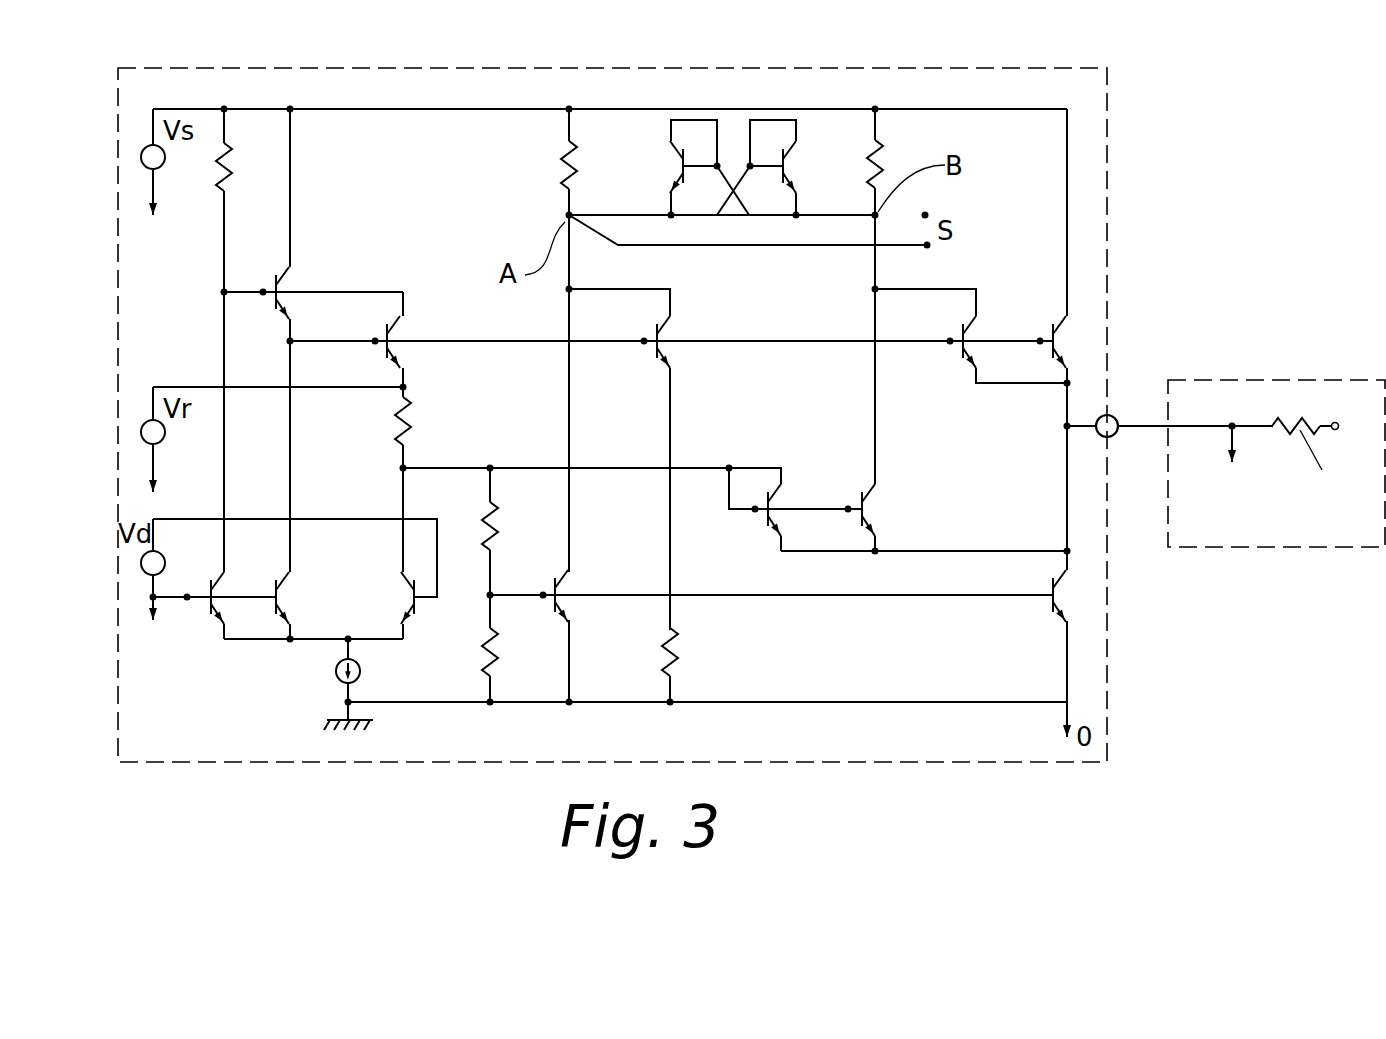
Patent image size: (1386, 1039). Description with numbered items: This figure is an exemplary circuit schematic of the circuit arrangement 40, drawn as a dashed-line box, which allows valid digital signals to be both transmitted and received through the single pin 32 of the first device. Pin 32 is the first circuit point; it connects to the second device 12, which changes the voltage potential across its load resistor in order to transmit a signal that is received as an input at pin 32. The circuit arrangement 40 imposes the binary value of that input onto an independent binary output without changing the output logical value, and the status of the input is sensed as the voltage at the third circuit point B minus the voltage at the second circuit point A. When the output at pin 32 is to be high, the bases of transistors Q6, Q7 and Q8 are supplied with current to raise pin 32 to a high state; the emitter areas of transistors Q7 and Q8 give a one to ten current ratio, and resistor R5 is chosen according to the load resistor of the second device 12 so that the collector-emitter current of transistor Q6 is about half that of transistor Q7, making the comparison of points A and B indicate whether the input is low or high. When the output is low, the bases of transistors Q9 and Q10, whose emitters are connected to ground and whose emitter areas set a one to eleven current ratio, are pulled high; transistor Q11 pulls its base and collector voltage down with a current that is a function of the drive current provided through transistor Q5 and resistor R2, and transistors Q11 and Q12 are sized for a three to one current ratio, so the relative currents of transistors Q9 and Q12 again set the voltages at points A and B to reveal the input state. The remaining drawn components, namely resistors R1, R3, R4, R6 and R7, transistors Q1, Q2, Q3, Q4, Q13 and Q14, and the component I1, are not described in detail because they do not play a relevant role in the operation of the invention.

The circuit arrangement 40 is at (505, 68).
The pin 32 is at (1113, 413).
The second device 12 is at (1282, 548).
The resistor R1 is at (218, 172).
The resistor R2 is at (397, 418).
The resistor R3 is at (485, 522).
The resistor R4 is at (482, 672).
The resistor R5 is at (662, 672).
The resistor R6 is at (560, 175).
The resistor R7 is at (868, 176).
The transistor Q1 is at (206, 592).
The transistor Q2 is at (270, 592).
The transistor Q3 is at (408, 585).
The transistor Q4 is at (271, 284).
The transistor Q5 is at (382, 338).
The fifth transistor Q6 is at (650, 337).
The first transistor Q7 is at (957, 334).
The second transistor Q8 is at (1048, 334).
The sixth transistor Q9 is at (550, 585).
The seventh transistor Q10 is at (1048, 587).
The third transistor Q11 is at (764, 507).
The fourth transistor Q12 is at (858, 505).
The transistor Q13 is at (781, 165).
The transistor Q14 is at (700, 150).
The current source I1 is at (355, 684).